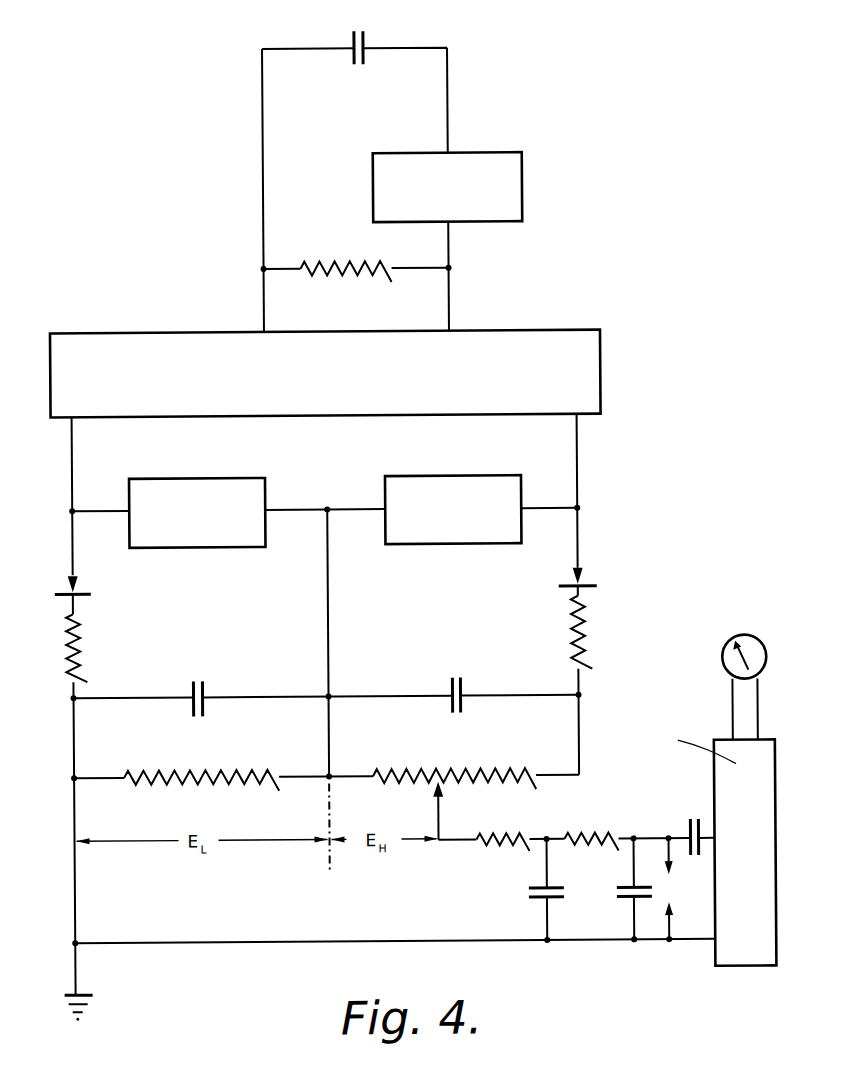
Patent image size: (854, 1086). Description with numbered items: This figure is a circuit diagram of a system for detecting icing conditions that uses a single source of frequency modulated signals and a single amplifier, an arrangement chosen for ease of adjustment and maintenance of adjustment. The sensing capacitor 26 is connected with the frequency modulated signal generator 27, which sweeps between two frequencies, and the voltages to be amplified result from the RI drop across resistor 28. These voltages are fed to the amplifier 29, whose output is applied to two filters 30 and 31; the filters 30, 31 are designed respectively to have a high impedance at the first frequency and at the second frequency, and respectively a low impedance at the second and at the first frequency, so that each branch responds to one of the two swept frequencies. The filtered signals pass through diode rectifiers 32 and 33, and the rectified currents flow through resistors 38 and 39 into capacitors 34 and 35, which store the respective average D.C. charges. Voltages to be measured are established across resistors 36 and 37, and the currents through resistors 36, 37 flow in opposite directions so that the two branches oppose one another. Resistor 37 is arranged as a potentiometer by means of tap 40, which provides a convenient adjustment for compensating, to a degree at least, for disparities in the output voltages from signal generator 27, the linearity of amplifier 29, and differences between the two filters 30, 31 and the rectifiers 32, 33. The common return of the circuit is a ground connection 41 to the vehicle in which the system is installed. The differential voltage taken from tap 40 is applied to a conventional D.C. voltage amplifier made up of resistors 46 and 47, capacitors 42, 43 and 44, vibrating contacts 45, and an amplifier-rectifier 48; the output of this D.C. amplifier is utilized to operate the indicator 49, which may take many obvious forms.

The sensing capacitor 26 is at (368, 36).
The frequency modulated signal generator 27 is at (480, 153).
The resistor 28 is at (345, 262).
The amplifier 29 is at (358, 331).
The filter 30 is at (176, 477).
The filter 31 is at (444, 476).
The diode rectifier 32 is at (63, 590).
The diode rectifier 33 is at (588, 586).
The capacitor 34 is at (204, 685).
The capacitor 35 is at (448, 681).
The resistor 36 is at (170, 783).
The resistor 37 is at (495, 768).
The resistor 38 is at (82, 641).
The resistor 39 is at (590, 646).
The tap 40 is at (437, 800).
The ground connection 41 is at (90, 1000).
The capacitor 42 is at (527, 897).
The capacitor 43 is at (616, 892).
The capacitor 44 is at (695, 820).
The vibrating contacts 45 is at (675, 890).
The resistor 46 is at (507, 836).
The resistor 47 is at (594, 836).
The amplifier-rectifier 48 is at (718, 731).
The indicator 49 is at (741, 638).